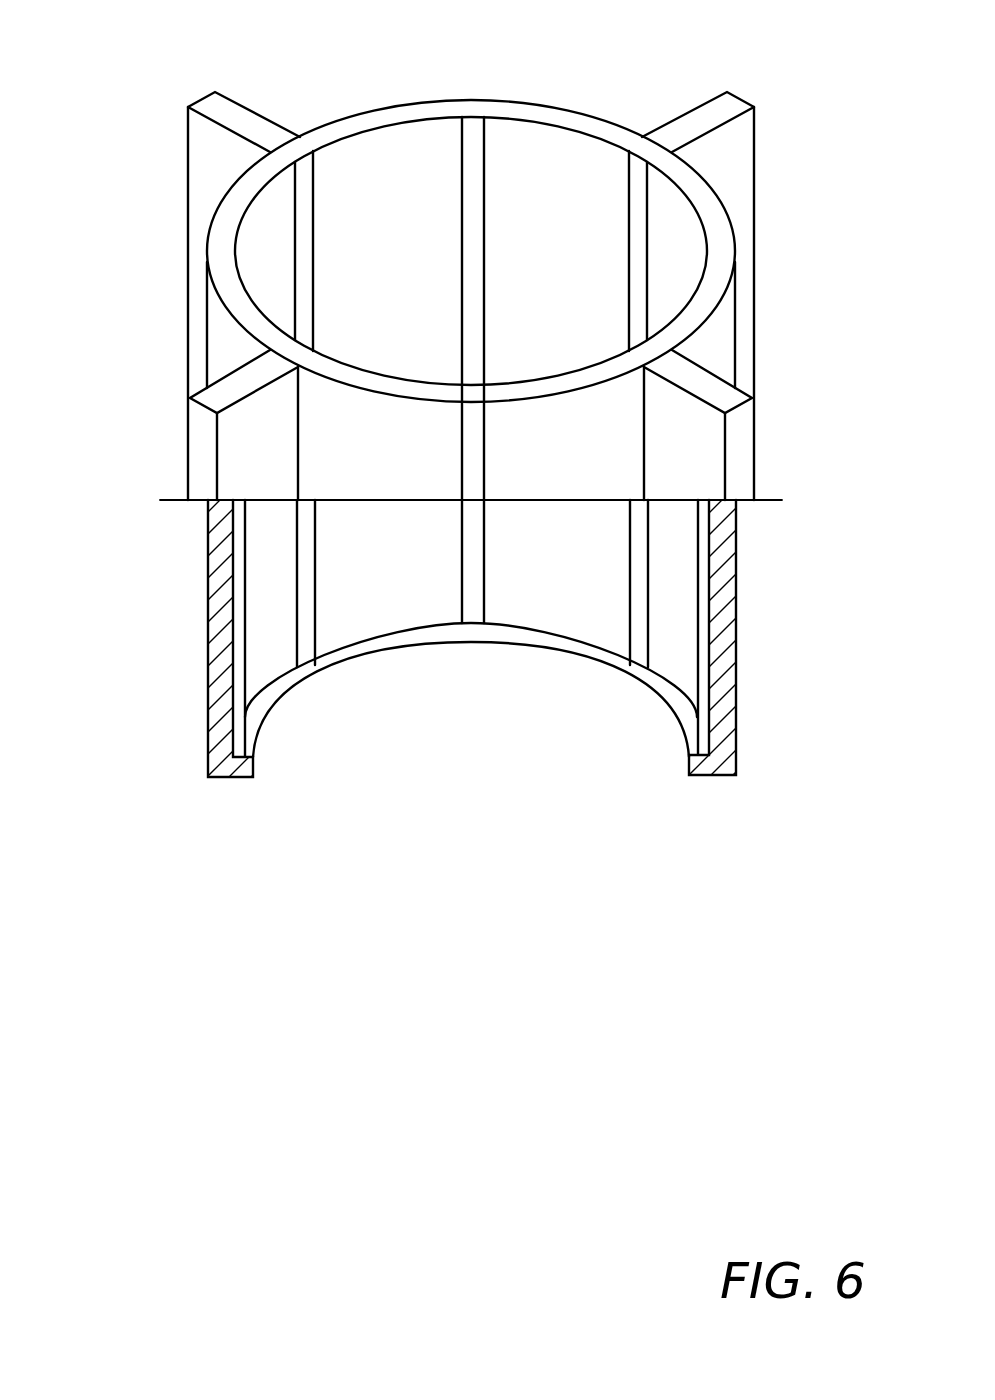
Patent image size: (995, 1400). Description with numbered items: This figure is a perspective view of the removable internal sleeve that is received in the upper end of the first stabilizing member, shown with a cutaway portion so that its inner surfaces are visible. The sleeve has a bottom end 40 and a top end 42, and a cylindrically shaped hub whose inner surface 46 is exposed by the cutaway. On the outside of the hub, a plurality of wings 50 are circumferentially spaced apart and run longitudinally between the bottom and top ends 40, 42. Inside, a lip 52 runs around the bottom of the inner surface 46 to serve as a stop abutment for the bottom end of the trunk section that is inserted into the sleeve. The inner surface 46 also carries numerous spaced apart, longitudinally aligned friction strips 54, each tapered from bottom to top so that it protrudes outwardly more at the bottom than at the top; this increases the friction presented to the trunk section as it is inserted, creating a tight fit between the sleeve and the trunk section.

The bottom end 40 is at (230, 767).
The top end 42 is at (377, 113).
The inner surface 46 is at (567, 157).
The wings 50 is at (205, 158).
The lip 52 is at (387, 649).
The friction strips 54 is at (460, 143).